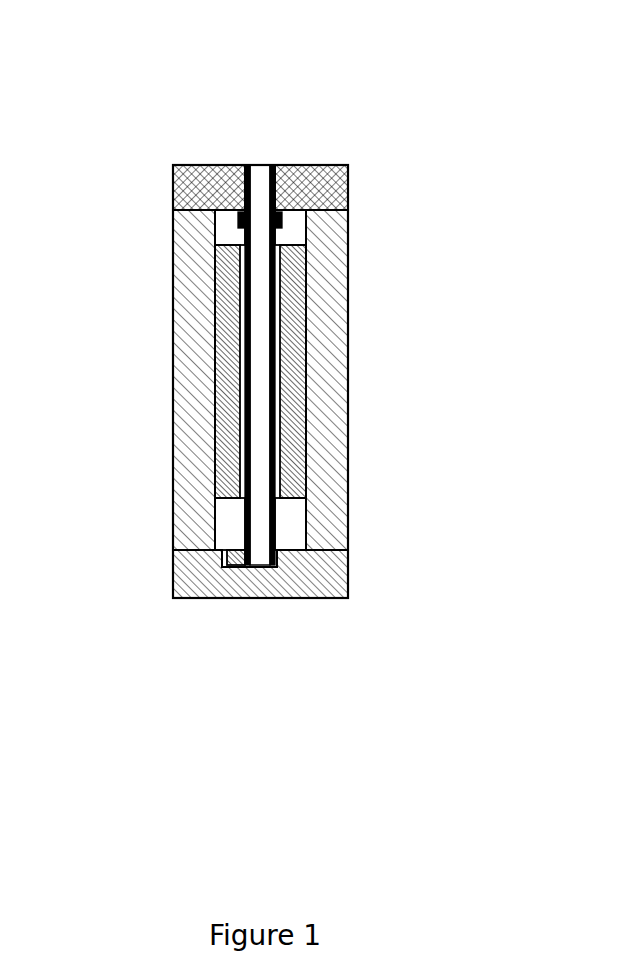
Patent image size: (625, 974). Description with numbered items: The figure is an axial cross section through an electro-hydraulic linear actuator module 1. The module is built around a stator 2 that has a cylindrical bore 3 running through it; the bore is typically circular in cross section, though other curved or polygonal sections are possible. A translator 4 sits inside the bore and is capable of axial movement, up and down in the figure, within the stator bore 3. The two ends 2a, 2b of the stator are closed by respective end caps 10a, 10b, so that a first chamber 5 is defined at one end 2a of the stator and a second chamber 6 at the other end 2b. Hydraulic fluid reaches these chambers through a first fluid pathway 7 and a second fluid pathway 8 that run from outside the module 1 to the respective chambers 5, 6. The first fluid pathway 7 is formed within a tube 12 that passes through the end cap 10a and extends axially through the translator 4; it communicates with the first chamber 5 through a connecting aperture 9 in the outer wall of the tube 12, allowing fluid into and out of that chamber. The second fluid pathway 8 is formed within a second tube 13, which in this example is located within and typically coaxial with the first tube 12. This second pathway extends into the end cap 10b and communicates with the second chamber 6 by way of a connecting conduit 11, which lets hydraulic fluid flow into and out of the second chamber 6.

The electro-hydraulic linear actuator module 1 is at (115, 168).
The stator 2 is at (313, 358).
The first end of the stator 2a is at (348, 214).
The second end of the stator 2b is at (348, 545).
The cylindrical bore 3 is at (308, 503).
The translator 4 is at (306, 378).
The first chamber 5 is at (292, 233).
The second chamber 6 is at (295, 522).
The first fluid pathway 7 is at (246, 192).
The second fluid pathway 8 is at (260, 197).
The connecting aperture 9 is at (288, 212).
The end cap 10a is at (198, 196).
The end cap 10b is at (203, 580).
The connecting conduit 11 is at (240, 565).
The first tube 12 is at (285, 165).
The second tube 13 is at (271, 187).